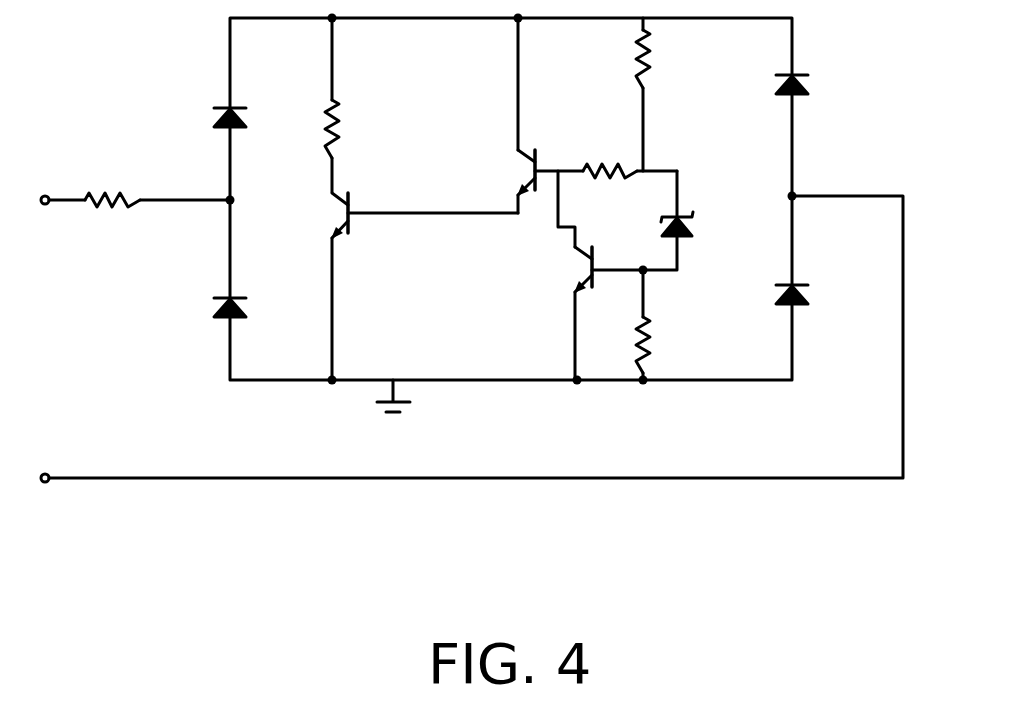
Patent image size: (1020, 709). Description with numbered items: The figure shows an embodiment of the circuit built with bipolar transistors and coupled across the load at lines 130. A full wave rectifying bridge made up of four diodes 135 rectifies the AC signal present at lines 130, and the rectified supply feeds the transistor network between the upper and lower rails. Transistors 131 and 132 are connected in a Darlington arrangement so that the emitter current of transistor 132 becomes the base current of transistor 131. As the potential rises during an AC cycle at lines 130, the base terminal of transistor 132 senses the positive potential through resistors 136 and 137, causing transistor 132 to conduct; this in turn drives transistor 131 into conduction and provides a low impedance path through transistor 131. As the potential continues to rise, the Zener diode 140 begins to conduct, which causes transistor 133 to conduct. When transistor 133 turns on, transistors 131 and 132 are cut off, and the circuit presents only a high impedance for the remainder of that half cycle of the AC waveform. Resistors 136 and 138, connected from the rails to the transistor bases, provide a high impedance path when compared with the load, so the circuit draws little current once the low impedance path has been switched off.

The lines 130 is at (45, 222).
The transistor 131 is at (335, 212).
The transistor 132 is at (513, 170).
The transistor 133 is at (570, 262).
The diodes 135 is at (213, 118).
The resistor 136 is at (663, 52).
The resistor 137 is at (348, 125).
The resistor 138 is at (660, 347).
The Zener diode 140 is at (697, 227).